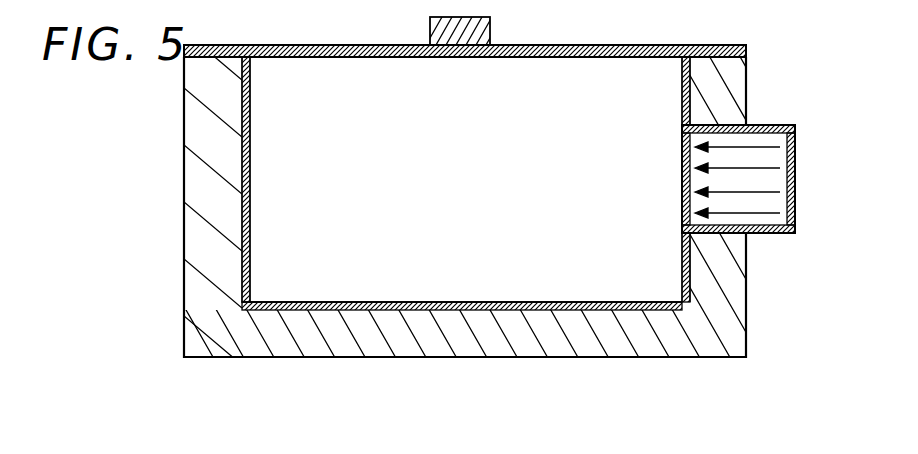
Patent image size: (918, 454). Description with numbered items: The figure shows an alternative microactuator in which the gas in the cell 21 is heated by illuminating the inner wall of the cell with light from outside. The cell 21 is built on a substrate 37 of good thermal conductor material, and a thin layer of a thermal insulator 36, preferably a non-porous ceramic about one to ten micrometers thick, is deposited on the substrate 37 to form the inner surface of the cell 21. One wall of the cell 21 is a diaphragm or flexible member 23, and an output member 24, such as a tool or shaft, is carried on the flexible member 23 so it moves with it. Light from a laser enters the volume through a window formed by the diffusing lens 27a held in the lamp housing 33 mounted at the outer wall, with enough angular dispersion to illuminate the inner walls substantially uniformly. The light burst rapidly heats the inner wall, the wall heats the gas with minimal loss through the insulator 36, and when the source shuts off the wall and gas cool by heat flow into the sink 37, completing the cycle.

The cell 21 is at (490, 290).
The flexible member 23 is at (573, 45).
The output member 24 is at (487, 21).
The diffusing lens 27a is at (684, 189).
The lamp housing 33 is at (767, 125).
The thermal insulator layer 36 is at (243, 237).
The substrate 37 is at (198, 172).